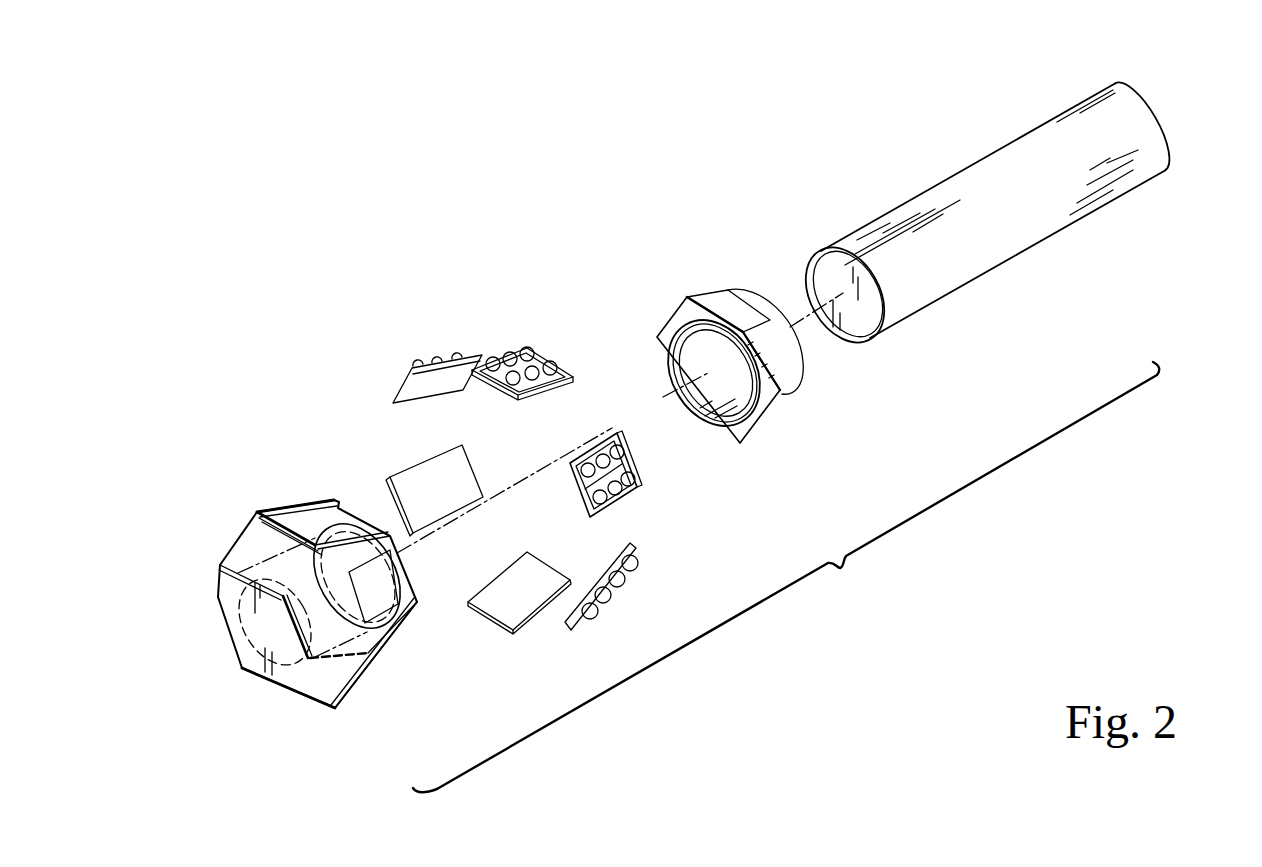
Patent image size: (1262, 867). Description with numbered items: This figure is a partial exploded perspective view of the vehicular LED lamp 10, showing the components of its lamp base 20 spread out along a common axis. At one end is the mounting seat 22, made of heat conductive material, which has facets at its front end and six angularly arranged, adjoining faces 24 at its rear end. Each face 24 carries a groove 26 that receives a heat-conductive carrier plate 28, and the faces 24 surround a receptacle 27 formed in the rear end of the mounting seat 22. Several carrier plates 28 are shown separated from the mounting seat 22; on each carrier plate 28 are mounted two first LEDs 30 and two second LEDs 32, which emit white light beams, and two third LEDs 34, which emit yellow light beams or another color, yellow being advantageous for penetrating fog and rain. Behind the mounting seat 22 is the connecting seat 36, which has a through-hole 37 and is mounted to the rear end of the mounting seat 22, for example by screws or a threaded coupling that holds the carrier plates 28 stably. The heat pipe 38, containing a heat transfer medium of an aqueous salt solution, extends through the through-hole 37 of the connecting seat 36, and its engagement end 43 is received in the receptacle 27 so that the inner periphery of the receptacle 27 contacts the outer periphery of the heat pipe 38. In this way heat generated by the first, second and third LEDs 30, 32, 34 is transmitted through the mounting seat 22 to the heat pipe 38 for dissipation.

The vehicular LED lamp 10 is at (453, 240).
The lamp base 20 is at (786, 577).
The mounting seat 22 is at (230, 619).
The faces 24 is at (282, 513).
The groove 26 is at (323, 523).
The receptacle 27 is at (243, 667).
The carrier plate 28 is at (393, 401).
The first LEDs 30 is at (577, 478).
The second LEDs 32 is at (621, 493).
The third LEDs 34 is at (623, 450).
The connecting seat 36 is at (783, 392).
The through-hole 37 is at (687, 350).
The heat pipe 38 is at (1140, 170).
The engagement end 43 is at (833, 270).